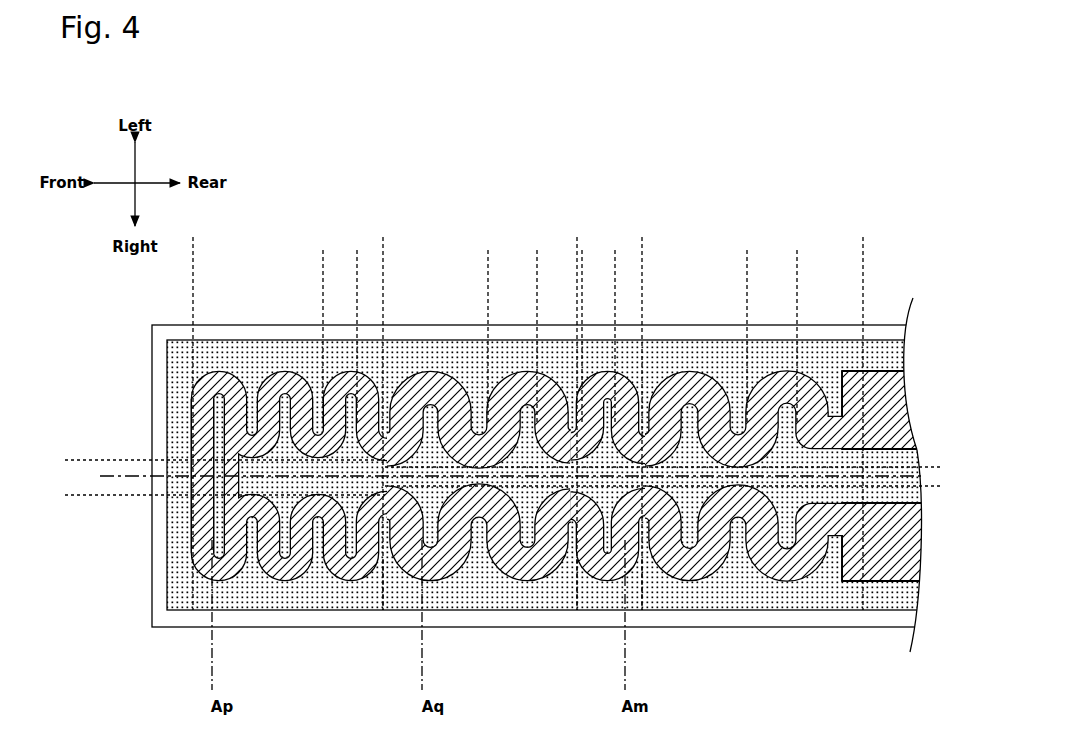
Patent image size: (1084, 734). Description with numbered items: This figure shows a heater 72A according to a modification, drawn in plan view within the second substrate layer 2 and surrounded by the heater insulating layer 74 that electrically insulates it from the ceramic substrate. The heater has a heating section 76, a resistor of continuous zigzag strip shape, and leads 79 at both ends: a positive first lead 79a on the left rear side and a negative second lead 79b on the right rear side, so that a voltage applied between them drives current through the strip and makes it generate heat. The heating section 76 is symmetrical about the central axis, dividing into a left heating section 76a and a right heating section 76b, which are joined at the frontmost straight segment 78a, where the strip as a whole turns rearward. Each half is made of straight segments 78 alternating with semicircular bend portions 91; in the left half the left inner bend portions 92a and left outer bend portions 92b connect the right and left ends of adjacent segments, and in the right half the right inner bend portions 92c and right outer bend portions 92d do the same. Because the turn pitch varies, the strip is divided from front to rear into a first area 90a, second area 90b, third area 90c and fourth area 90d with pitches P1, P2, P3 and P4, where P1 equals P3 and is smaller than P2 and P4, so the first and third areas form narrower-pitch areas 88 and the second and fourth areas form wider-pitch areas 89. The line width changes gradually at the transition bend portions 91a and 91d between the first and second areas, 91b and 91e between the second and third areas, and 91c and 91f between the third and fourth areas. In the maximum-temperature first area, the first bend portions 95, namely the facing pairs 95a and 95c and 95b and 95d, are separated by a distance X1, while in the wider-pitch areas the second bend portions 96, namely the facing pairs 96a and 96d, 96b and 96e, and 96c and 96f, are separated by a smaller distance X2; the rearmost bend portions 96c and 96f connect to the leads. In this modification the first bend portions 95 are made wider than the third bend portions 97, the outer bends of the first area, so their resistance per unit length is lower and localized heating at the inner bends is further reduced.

The second substrate layer 2 is at (162, 628).
The heater insulating layer 74 is at (172, 611).
The heating section 76 is at (502, 352).
The left heating section 76a is at (108, 372).
The right heating section 76b is at (108, 477).
The straight segments 78 is at (297, 560).
The frontmost straight segment 78a is at (220, 441).
The leads 79 is at (916, 387).
The first lead 79a is at (883, 337).
The second lead 79b is at (913, 490).
The heater 72A is at (935, 121).
The narrower-pitch areas 88 is at (271, 180).
The wider-pitch areas 89 is at (462, 180).
The first area 90a is at (383, 238).
The second area 90b is at (577, 238).
The third area 90c is at (577, 238).
The fourth area 90d is at (642, 238).
The bend portions 91 is at (188, 275).
The bend portion between first and second areas 91a is at (386, 378).
The bend portion between second and third areas 91b is at (553, 378).
The bend portion between third and fourth areas 91c is at (648, 378).
The bend portion between first and second areas 91d is at (388, 575).
The bend portion between second and third areas 91e is at (568, 575).
The bend portion between third and fourth areas 91f is at (650, 575).
The left inner bend portions 92a is at (183, 382).
The left outer bend portions 92b is at (218, 436).
The right inner bend portions 92c is at (219, 518).
The right outer bend portions 92d is at (183, 571).
The first bend portions 95 is at (212, 290).
The first bend portion 95a is at (222, 374).
The first bend portion 95b is at (327, 374).
The first bend portion 95c is at (233, 578).
The first bend portion 95d is at (315, 578).
The second bend portions 96 is at (441, 290).
The second bend portion 96a is at (480, 374).
The second bend portion 96b is at (723, 374).
The second bend portion 96c is at (833, 374).
The second bend portion 96d is at (478, 578).
The second bend portion 96e is at (740, 578).
The second bend portion 96f is at (835, 578).
The third bend portions 97 is at (262, 378).
The pitch P1 is at (324, 259).
The pitch P2 is at (489, 259).
The pitch P3 is at (583, 259).
The pitch P4 is at (748, 259).
The distance X1 is at (77, 461).
The distance X2 is at (932, 455).